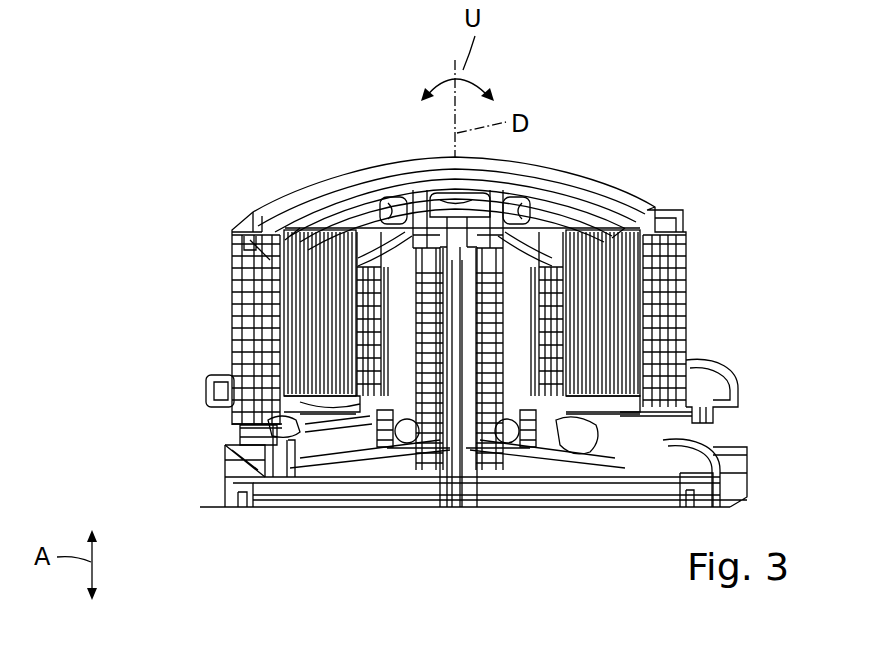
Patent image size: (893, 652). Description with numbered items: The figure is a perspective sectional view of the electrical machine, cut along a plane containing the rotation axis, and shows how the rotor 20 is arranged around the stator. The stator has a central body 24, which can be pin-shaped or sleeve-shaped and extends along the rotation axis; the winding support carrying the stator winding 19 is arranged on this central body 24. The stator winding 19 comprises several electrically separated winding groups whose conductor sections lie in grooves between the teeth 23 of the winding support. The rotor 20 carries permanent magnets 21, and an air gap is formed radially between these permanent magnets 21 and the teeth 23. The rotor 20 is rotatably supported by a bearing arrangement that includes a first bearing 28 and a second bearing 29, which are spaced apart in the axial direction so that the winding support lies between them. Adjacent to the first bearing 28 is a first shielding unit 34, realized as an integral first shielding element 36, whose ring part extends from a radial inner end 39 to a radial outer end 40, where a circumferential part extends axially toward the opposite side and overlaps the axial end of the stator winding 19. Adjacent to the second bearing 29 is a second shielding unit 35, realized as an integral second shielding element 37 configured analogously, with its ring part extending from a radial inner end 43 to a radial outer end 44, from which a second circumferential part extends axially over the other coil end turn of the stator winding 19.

The rotor 20 is at (684, 186).
The radial outer end 40 is at (264, 232).
The first shielding unit 34 is at (424, 186).
The first shielding element 36 is at (290, 200).
The first bearing 28 is at (397, 180).
The radial inner end 39 is at (416, 176).
The stator winding 19 is at (645, 278).
The teeth 23 is at (656, 300).
The permanent magnets 21 is at (666, 334).
The second bearing 29 is at (407, 468).
The central body 24 is at (492, 468).
The radial inner end 43 is at (376, 444).
The second shielding unit 35 is at (441, 486).
The second shielding element 37 is at (346, 432).
The radial outer end 44 is at (246, 430).